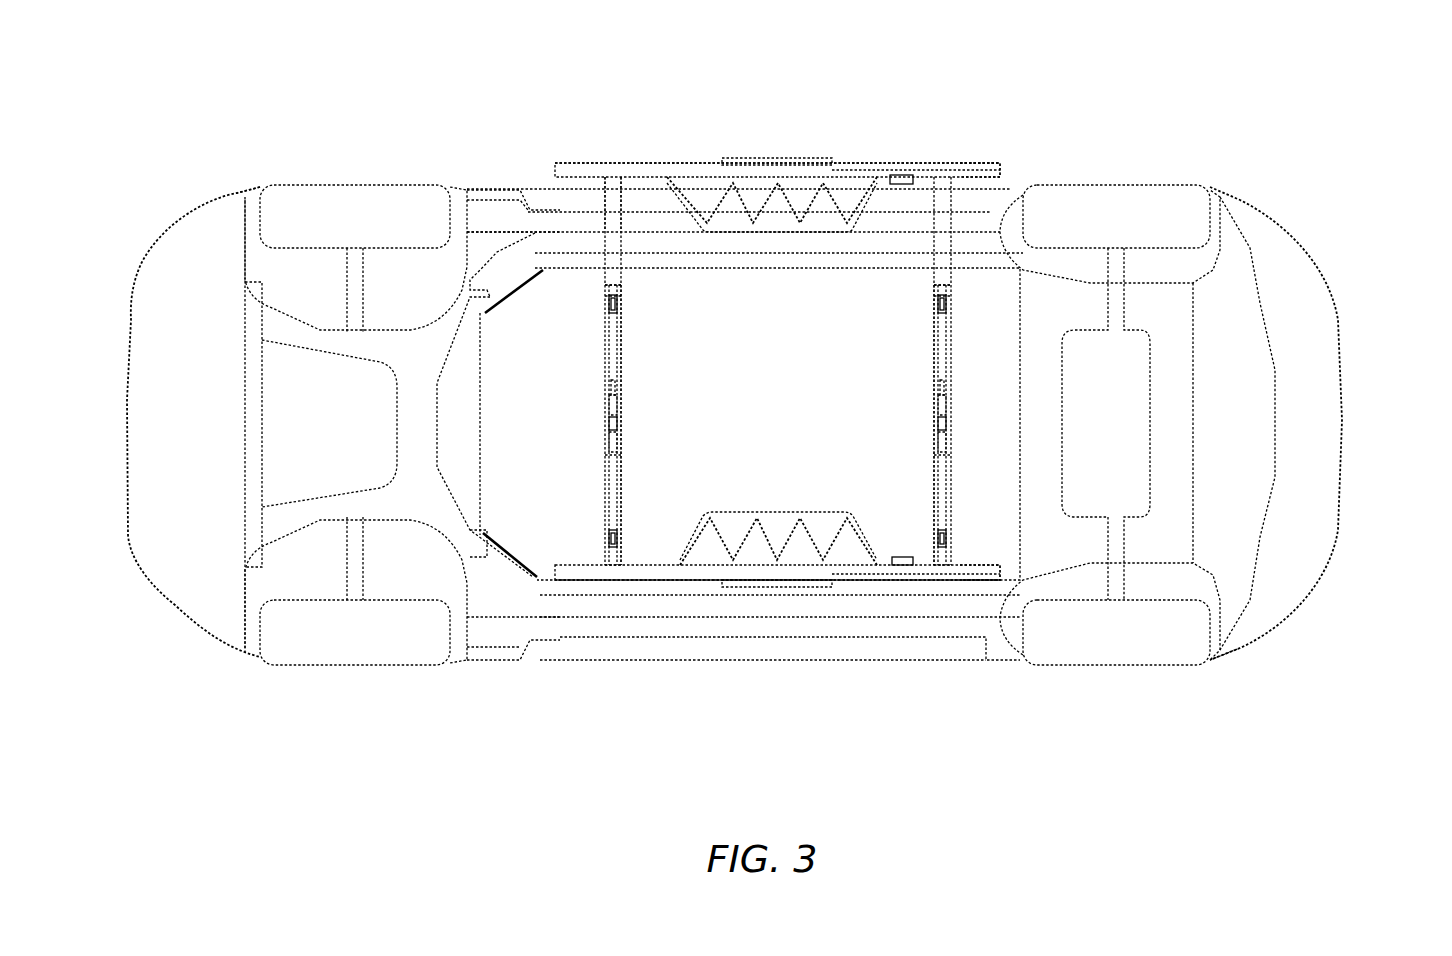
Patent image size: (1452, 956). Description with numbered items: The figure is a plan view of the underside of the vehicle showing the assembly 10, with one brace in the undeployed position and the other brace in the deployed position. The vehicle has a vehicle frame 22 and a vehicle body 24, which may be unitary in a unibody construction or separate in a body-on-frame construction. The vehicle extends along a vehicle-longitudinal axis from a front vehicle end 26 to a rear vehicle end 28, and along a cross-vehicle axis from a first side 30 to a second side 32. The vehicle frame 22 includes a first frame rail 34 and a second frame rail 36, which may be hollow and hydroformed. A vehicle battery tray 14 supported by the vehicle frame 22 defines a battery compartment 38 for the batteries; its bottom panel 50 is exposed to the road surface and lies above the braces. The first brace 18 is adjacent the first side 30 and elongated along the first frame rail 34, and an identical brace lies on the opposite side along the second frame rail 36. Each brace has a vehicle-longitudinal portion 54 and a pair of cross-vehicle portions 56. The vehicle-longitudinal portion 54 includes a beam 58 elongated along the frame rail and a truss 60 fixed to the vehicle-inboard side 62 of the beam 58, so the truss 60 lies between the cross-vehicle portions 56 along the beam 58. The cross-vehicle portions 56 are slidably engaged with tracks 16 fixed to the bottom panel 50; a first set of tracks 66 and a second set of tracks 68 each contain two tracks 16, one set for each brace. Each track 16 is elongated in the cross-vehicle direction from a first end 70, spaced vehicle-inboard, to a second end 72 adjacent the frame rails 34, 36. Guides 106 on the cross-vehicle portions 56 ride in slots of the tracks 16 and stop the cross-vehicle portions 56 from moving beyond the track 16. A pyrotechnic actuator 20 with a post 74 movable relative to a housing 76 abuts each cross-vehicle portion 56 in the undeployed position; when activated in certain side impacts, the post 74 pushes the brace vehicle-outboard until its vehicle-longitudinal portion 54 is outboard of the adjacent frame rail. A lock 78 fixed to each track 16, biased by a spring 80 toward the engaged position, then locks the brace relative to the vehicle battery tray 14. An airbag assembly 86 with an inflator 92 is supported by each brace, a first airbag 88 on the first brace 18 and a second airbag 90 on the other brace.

The assembly 10 is at (1298, 185).
The vehicle battery tray 14 is at (470, 480).
The track 16 is at (604, 370).
The first brace 18 is at (583, 160).
The pyrotechnic actuator 20 is at (622, 418).
The vehicle frame 22 is at (495, 185).
The vehicle body 24 is at (540, 665).
The front vehicle end 26 is at (117, 355).
The rear vehicle end 28 is at (1336, 500).
The first side 30 is at (688, 147).
The second side 32 is at (703, 698).
The first frame rail 34 is at (1000, 240).
The second frame rail 36 is at (1000, 608).
The battery compartment 38 is at (1022, 392).
The bottom panel 50 is at (1003, 317).
The vehicle-longitudinal portion 54 is at (640, 183).
The cross-vehicle portion 56 is at (612, 178).
The beam 58 is at (980, 163).
The truss 60 is at (775, 235).
The vehicle-inboard side 62 is at (672, 183).
The first set of tracks 66 is at (560, 343).
The second set of tracks 68 is at (562, 503).
The first end 70 is at (609, 423).
The second end 72 is at (604, 287).
The post 74 is at (616, 385).
The housing 76 is at (618, 410).
The lock 78 is at (640, 313).
The spring 80 is at (611, 305).
The airbag assembly 86 is at (816, 160).
The first airbag 88 is at (740, 160).
The second airbag 90 is at (752, 588).
The inflator 92 is at (905, 174).
The guide 106 is at (604, 296).